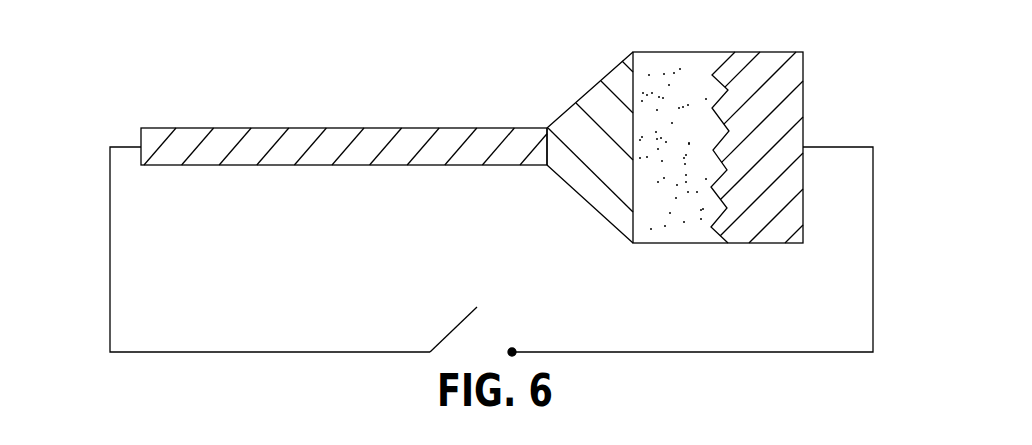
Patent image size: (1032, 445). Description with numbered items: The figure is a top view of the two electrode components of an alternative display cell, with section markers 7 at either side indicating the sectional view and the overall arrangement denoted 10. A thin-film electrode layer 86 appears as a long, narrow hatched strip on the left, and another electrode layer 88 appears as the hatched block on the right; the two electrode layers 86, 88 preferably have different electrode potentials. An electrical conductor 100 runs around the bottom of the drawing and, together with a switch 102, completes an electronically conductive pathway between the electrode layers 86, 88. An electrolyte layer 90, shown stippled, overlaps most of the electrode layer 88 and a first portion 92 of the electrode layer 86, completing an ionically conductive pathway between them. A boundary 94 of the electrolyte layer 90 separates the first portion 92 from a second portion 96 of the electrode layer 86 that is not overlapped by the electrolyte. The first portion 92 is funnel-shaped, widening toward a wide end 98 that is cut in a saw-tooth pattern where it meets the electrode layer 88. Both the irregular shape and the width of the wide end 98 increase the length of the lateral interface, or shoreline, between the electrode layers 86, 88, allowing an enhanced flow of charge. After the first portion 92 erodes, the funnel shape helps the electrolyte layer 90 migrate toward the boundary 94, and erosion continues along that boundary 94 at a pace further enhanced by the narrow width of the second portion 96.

The section line of FIG. 7 is at (97, 146).
The probe assembly 10 is at (453, 79).
The electrode layer 86 is at (344, 148).
The electrode layer 88 is at (770, 53).
The electrolyte layer 90 is at (680, 88).
The first portion 92 is at (615, 196).
The boundary 94 is at (543, 148).
The second portion 96 is at (298, 156).
The wide end 98 is at (727, 245).
The electrical conductor 100 is at (112, 250).
The switch 102 is at (476, 313).